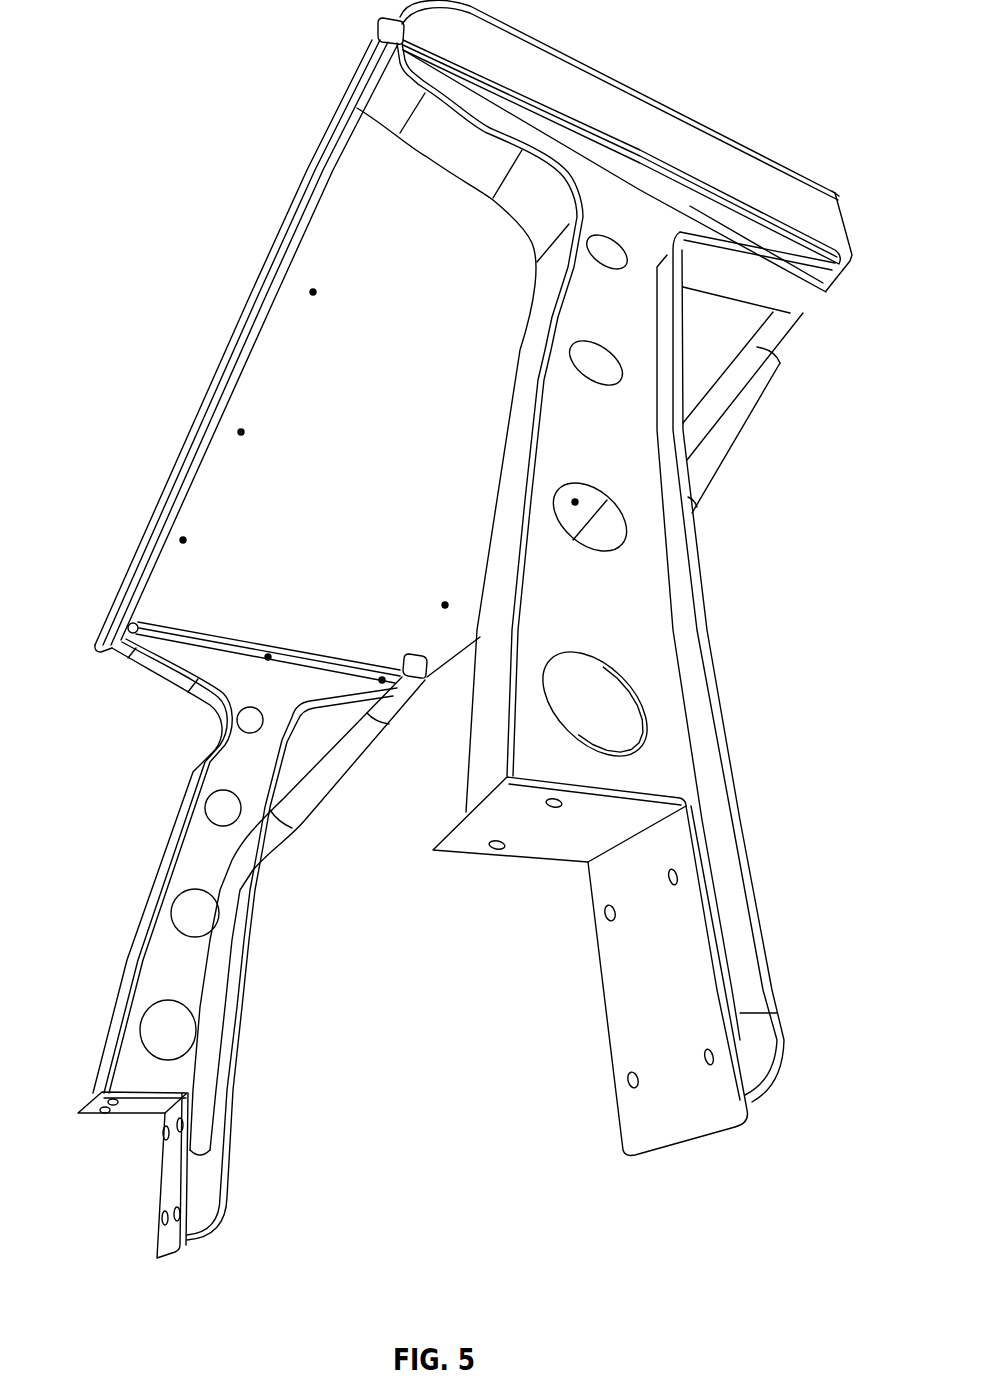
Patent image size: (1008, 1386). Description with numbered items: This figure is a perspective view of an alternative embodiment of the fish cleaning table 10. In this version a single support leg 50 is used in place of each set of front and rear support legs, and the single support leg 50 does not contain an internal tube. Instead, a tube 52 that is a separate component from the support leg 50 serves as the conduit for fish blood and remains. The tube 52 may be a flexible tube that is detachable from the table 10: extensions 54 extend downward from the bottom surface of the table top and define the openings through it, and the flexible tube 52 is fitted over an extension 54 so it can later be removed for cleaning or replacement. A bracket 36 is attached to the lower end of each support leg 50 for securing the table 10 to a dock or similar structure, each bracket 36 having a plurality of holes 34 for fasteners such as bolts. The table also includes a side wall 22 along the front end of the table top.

The table 10 is at (141, 33).
The side wall 22 is at (677, 140).
The holes 34 is at (497, 847).
The bracket 36 is at (647, 1112).
The single support leg 50 is at (577, 433).
The tube 52 is at (740, 420).
The extensions 54 is at (405, 660).